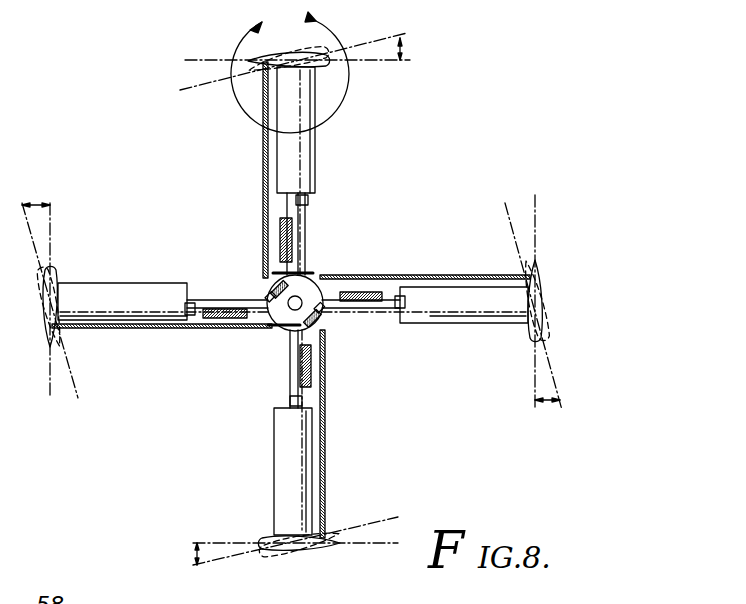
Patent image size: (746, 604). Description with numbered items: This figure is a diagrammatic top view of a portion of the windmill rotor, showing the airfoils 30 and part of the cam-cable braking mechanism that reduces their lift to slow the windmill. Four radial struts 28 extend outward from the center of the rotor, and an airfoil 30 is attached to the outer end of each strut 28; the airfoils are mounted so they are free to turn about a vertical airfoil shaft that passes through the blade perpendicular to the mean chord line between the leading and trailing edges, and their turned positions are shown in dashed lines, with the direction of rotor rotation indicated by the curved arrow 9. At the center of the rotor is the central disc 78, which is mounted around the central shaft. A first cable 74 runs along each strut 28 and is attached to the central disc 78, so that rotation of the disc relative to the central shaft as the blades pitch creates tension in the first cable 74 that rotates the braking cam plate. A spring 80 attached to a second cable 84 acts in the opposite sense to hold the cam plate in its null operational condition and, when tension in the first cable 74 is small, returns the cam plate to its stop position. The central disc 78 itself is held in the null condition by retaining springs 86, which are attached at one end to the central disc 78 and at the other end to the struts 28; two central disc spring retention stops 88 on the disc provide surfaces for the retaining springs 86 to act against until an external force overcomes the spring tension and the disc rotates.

The direction of rotation arrow 9 is at (290, 67).
The radial struts 28 is at (302, 163).
The airfoils 30 is at (326, 67).
The first cable 74 is at (262, 157).
The central disc 78 is at (311, 290).
The spring 80 is at (300, 236).
The second cable 84 is at (310, 202).
The retaining springs 86 is at (278, 287).
The central disc spring retention stops 88 is at (270, 298).